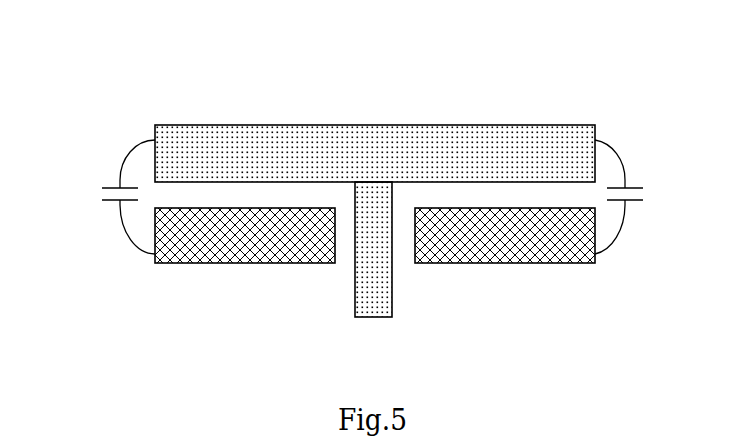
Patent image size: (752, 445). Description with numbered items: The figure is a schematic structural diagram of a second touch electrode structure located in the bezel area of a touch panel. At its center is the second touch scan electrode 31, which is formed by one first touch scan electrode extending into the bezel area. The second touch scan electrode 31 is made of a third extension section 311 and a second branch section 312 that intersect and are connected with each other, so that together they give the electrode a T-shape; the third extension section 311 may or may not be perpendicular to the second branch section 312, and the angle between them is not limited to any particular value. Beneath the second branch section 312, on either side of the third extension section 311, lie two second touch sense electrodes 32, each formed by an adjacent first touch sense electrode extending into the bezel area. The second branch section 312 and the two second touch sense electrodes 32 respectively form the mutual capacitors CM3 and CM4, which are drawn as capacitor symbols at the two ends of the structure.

The second touch scan electrode 31 is at (341, 174).
The second branch section 312 is at (270, 132).
The third extension section 311 is at (380, 260).
The second touch sense electrode 32 is at (197, 255).
The mutual capacitor CM3 is at (99, 197).
The mutual capacitor CM4 is at (649, 197).